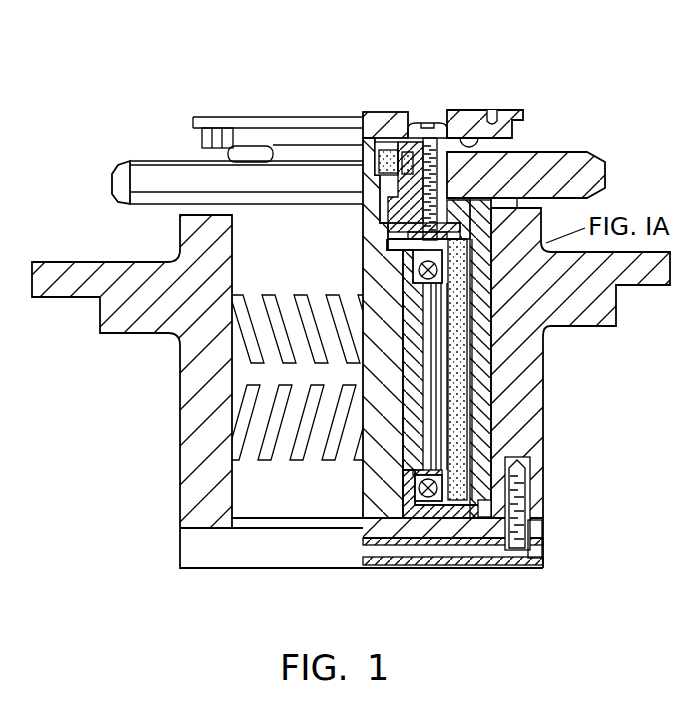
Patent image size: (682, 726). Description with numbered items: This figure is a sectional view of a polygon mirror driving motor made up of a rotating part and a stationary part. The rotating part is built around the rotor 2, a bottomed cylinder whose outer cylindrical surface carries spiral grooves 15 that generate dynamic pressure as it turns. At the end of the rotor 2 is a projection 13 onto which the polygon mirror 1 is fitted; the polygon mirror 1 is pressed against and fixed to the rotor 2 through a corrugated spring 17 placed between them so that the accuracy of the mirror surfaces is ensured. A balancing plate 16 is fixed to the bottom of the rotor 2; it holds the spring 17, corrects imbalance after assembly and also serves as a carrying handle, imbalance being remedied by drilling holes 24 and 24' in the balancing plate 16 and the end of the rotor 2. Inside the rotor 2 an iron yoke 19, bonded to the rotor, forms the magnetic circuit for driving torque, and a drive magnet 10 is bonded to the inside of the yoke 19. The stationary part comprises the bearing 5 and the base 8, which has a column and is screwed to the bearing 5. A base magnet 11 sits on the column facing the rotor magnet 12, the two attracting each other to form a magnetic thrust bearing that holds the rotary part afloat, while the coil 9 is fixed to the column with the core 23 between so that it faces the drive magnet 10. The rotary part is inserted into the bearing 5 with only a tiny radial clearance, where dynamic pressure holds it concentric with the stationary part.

The polygon mirror 1 is at (592, 170).
The rotor 2 is at (248, 236).
The bearing 5 is at (510, 420).
The base 8 is at (363, 478).
The coil 9 is at (483, 428).
The drive magnet 10 is at (495, 462).
The base magnet 11 is at (386, 150).
The rotor magnet 12 is at (414, 160).
The projection 13 is at (513, 142).
The spiral grooves 15 is at (232, 420).
The balancing plate 16 is at (507, 115).
The corrugated spring 17 is at (250, 146).
The yoke 19 is at (473, 340).
The core 23 is at (412, 452).
The hole 24 is at (514, 540).
The hole 24' is at (506, 76).